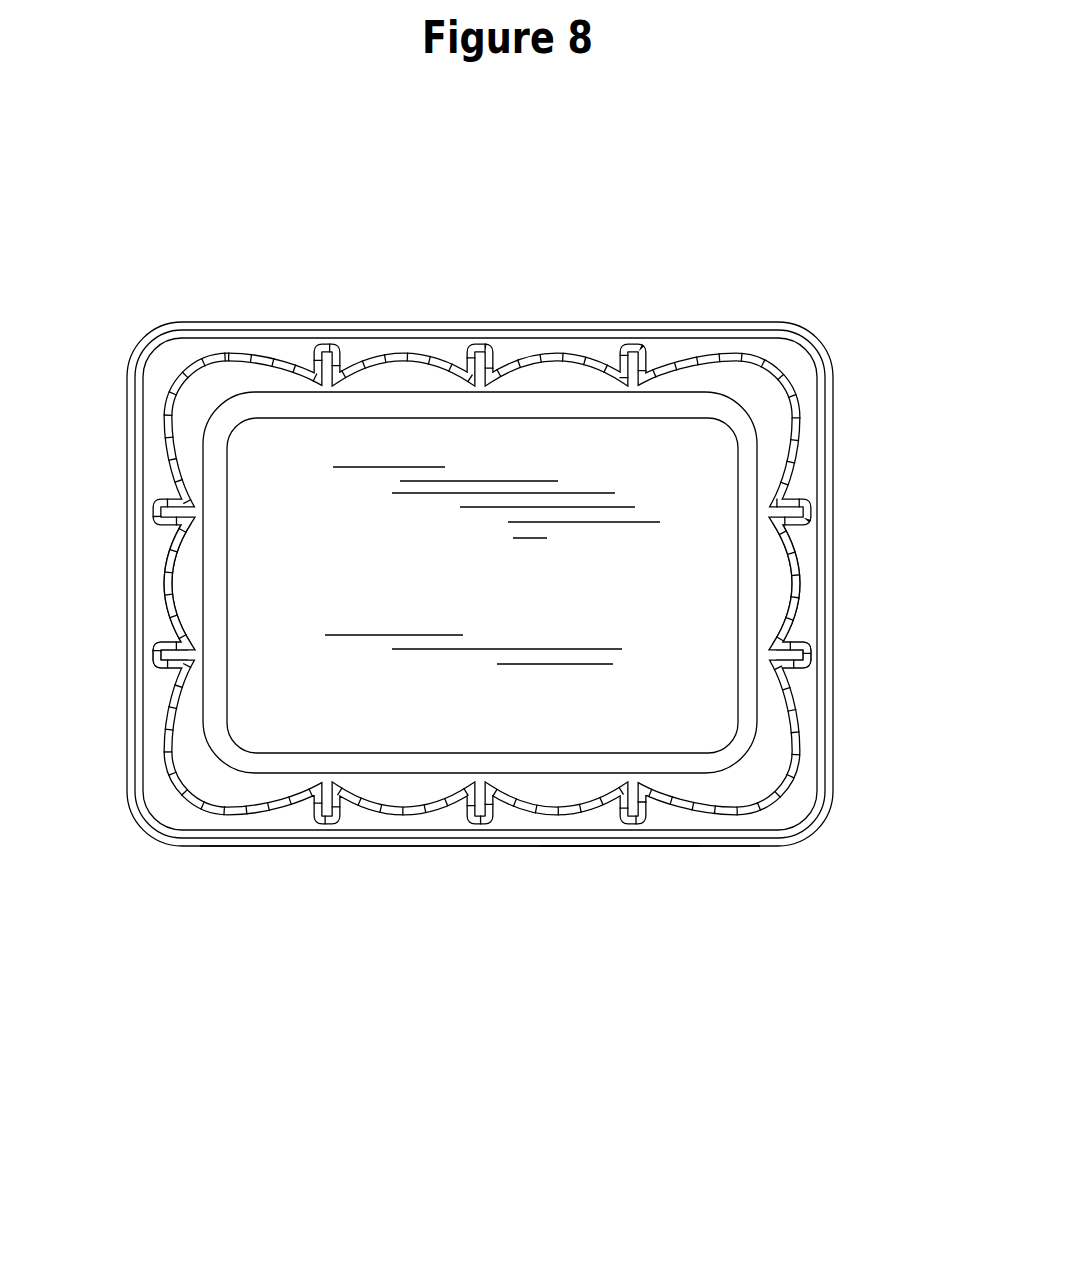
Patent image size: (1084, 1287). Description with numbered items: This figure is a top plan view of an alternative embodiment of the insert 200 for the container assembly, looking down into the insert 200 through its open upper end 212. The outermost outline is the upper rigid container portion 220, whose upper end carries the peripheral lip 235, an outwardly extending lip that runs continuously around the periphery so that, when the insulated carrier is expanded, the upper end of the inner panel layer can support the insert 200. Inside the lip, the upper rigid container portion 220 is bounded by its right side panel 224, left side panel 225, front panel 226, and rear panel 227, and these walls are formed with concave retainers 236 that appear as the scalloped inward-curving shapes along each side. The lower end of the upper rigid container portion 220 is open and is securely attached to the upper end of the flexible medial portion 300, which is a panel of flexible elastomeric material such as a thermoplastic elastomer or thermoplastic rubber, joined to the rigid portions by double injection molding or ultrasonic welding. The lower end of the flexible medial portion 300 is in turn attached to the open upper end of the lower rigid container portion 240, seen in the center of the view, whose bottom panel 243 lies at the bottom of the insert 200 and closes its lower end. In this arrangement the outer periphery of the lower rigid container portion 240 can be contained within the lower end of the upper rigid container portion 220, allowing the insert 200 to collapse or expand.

The insert 200 is at (502, 692).
The upper end 212 is at (837, 597).
The upper rigid container portion 220 is at (787, 332).
The right side panel 224 is at (808, 553).
The left side panel 225 is at (163, 550).
The front panel 226 is at (508, 350).
The rear panel 227 is at (425, 845).
The peripheral lip 235 is at (575, 843).
The concave retainer 236 is at (793, 595).
The lower rigid container portion 240 is at (485, 450).
The bottom panel 243 is at (641, 455).
The flexible medial portion 300 is at (257, 410).